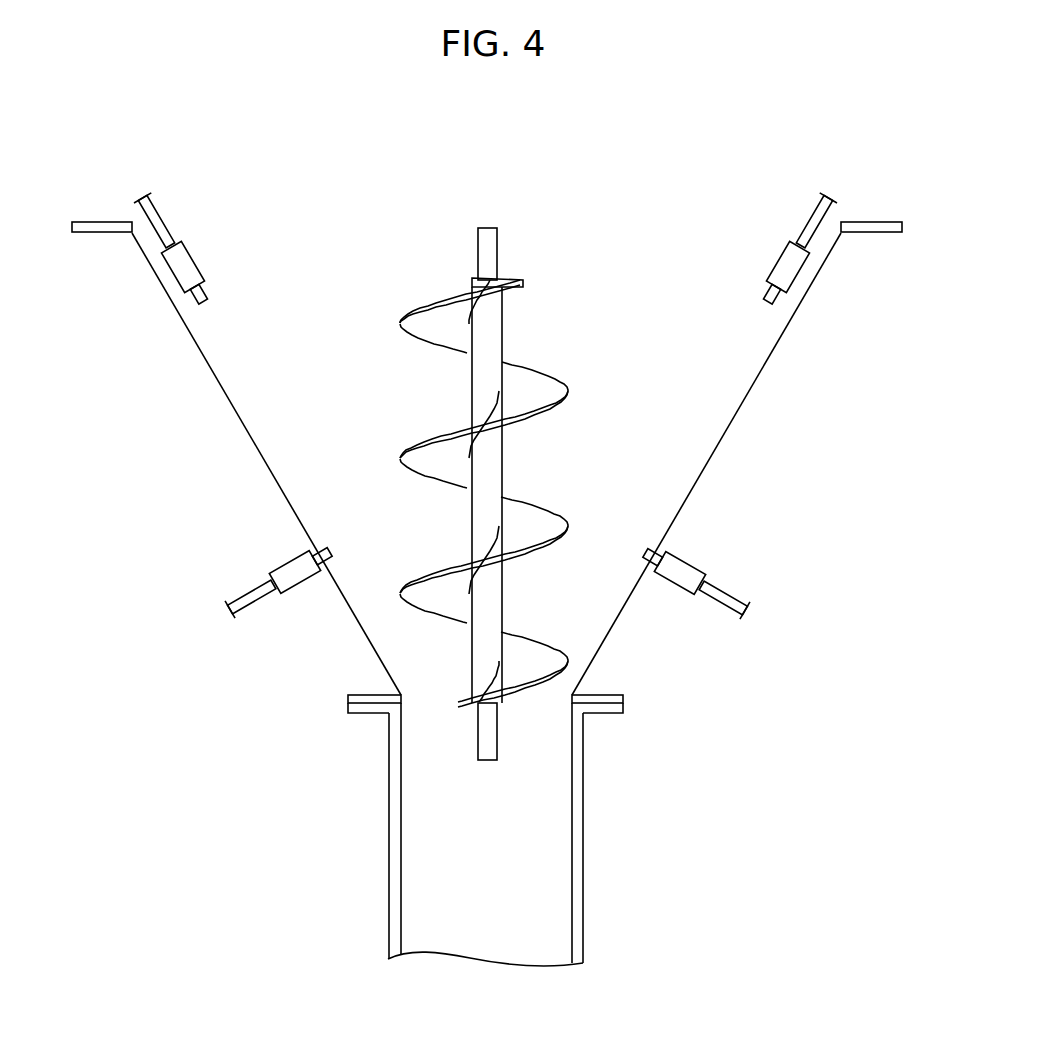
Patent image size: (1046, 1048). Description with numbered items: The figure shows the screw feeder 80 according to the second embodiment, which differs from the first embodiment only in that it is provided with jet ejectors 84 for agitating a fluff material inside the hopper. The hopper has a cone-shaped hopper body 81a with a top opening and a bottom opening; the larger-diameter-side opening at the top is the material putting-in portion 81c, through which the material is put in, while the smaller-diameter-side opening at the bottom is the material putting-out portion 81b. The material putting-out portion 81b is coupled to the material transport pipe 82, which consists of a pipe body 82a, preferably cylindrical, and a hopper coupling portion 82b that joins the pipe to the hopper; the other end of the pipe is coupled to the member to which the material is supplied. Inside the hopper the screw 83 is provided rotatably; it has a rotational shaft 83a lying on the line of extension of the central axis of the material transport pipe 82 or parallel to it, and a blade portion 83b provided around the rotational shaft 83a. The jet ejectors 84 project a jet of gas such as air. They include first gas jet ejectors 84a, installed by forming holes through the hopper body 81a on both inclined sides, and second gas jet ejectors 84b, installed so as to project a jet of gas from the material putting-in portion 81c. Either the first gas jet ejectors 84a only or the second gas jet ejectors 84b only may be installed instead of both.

The screw feeder 80 is at (745, 193).
The hopper body 81a is at (699, 482).
The material putting-out portion 81b is at (610, 693).
The material putting-in portion 81c is at (874, 230).
The material transport pipe 82 is at (728, 731).
The pipe body 82a is at (583, 880).
The hopper coupling portion 82b is at (608, 709).
The screw 83 is at (540, 352).
The rotational shaft 83a is at (491, 236).
The blade portion 83b is at (566, 386).
The jet ejector 84 is at (788, 540).
The first gas jet ejector 84a is at (293, 571).
The second gas jet ejector 84b is at (185, 264).